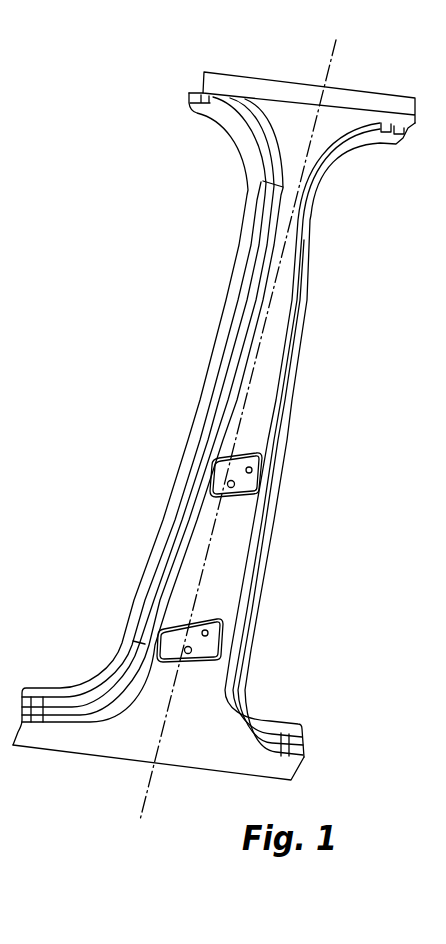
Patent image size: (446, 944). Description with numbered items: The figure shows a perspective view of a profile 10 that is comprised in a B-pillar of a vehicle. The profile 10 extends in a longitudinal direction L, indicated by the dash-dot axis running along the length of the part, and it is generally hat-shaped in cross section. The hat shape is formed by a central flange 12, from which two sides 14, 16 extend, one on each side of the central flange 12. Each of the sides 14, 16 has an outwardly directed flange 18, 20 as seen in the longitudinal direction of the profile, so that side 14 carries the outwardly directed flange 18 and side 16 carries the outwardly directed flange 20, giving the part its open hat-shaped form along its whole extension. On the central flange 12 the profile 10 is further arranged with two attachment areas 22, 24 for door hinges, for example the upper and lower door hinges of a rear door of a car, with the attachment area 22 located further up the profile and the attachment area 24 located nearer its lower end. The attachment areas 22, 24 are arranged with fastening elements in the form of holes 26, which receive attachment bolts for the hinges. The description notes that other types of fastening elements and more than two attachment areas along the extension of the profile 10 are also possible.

The profile 10 is at (214, 436).
The central flange 12 is at (228, 566).
The side 14 is at (185, 522).
The side 16 is at (282, 396).
The outwardly directed flange 18 is at (209, 396).
The outwardly directed flange 20 is at (311, 286).
The attachment area 22 is at (215, 460).
The attachment area 24 is at (173, 633).
The holes 26 is at (252, 471).
The longitudinal direction L is at (145, 797).